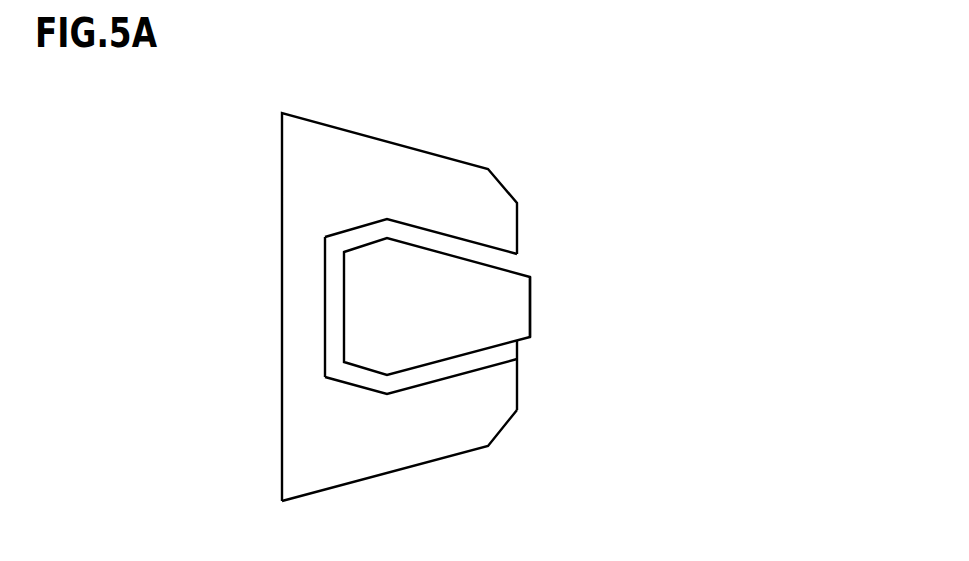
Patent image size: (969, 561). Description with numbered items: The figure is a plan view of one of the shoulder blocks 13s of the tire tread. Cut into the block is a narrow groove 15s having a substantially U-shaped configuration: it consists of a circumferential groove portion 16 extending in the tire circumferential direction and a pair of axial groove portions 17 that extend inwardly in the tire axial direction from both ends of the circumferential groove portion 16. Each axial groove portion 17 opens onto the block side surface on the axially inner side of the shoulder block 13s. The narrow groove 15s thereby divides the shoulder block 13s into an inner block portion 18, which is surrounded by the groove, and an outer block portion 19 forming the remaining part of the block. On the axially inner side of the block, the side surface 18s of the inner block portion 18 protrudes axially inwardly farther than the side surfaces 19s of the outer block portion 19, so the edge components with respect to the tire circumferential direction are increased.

The shoulder block 13s is at (477, 307).
The narrow groove 15s is at (322, 306).
The circumferential groove portion 16 is at (326, 307).
The axial groove portion 17 is at (415, 226).
The inner block portion 18 is at (447, 298).
The side surface of inner block portion 18s is at (532, 305).
The outer block portion 19 is at (443, 197).
The side surface of outer block portion 19s is at (517, 388).